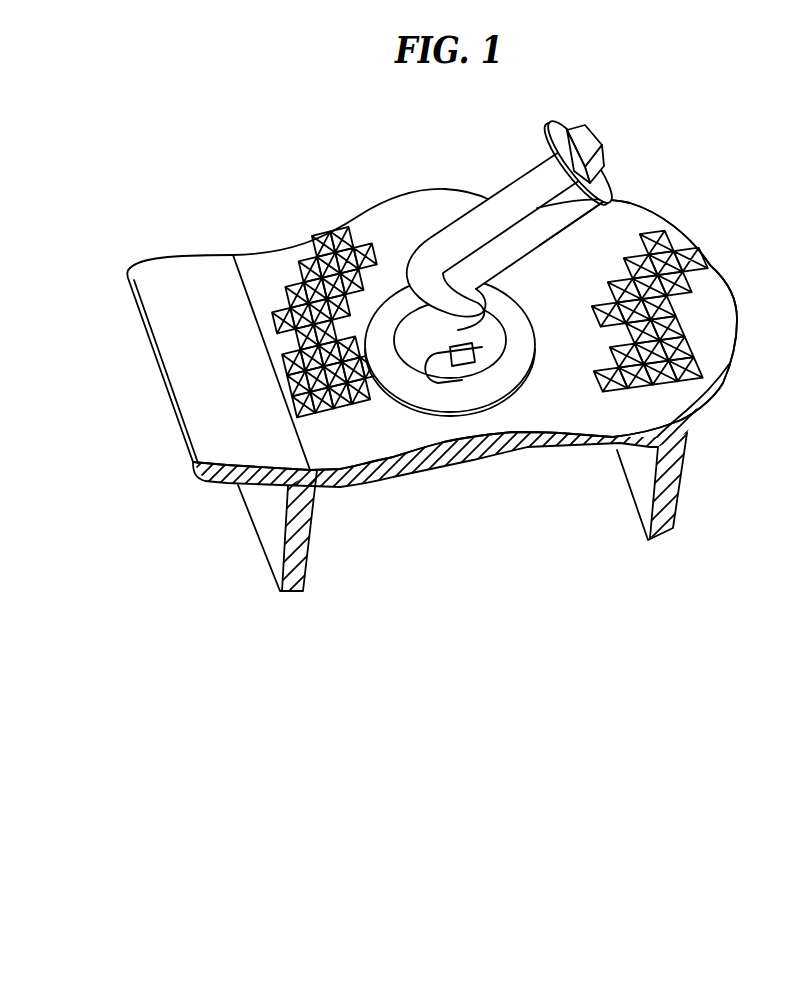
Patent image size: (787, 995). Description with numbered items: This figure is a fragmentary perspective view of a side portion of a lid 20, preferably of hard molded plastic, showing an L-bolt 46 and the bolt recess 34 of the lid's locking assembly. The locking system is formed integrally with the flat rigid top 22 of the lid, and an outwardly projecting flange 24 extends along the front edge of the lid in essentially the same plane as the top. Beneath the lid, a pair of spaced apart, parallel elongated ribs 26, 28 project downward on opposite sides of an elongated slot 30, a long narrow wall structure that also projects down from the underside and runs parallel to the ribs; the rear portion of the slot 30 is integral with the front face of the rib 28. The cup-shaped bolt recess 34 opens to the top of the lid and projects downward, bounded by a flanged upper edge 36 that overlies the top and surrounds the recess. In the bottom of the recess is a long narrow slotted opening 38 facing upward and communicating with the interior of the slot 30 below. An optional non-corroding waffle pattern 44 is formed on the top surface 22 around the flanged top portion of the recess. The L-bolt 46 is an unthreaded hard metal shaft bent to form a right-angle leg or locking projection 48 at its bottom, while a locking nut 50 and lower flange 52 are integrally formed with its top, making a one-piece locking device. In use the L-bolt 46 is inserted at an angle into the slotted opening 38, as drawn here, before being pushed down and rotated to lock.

The lid 20 is at (680, 262).
The flat rigid top 22 is at (357, 240).
The outwardly projecting flange 24 is at (217, 400).
The rib 26 is at (307, 562).
The rib 28 is at (667, 502).
The elongated slot 30 is at (460, 468).
The bolt recess 34 is at (428, 338).
The flanged upper edge 36 is at (449, 398).
The slotted opening 38 is at (496, 375).
The waffle pattern 44 is at (292, 283).
The L-bolt 46 is at (505, 182).
The locking projection 48 is at (597, 207).
The locking nut 50 is at (596, 147).
The lower flange 52 is at (557, 124).